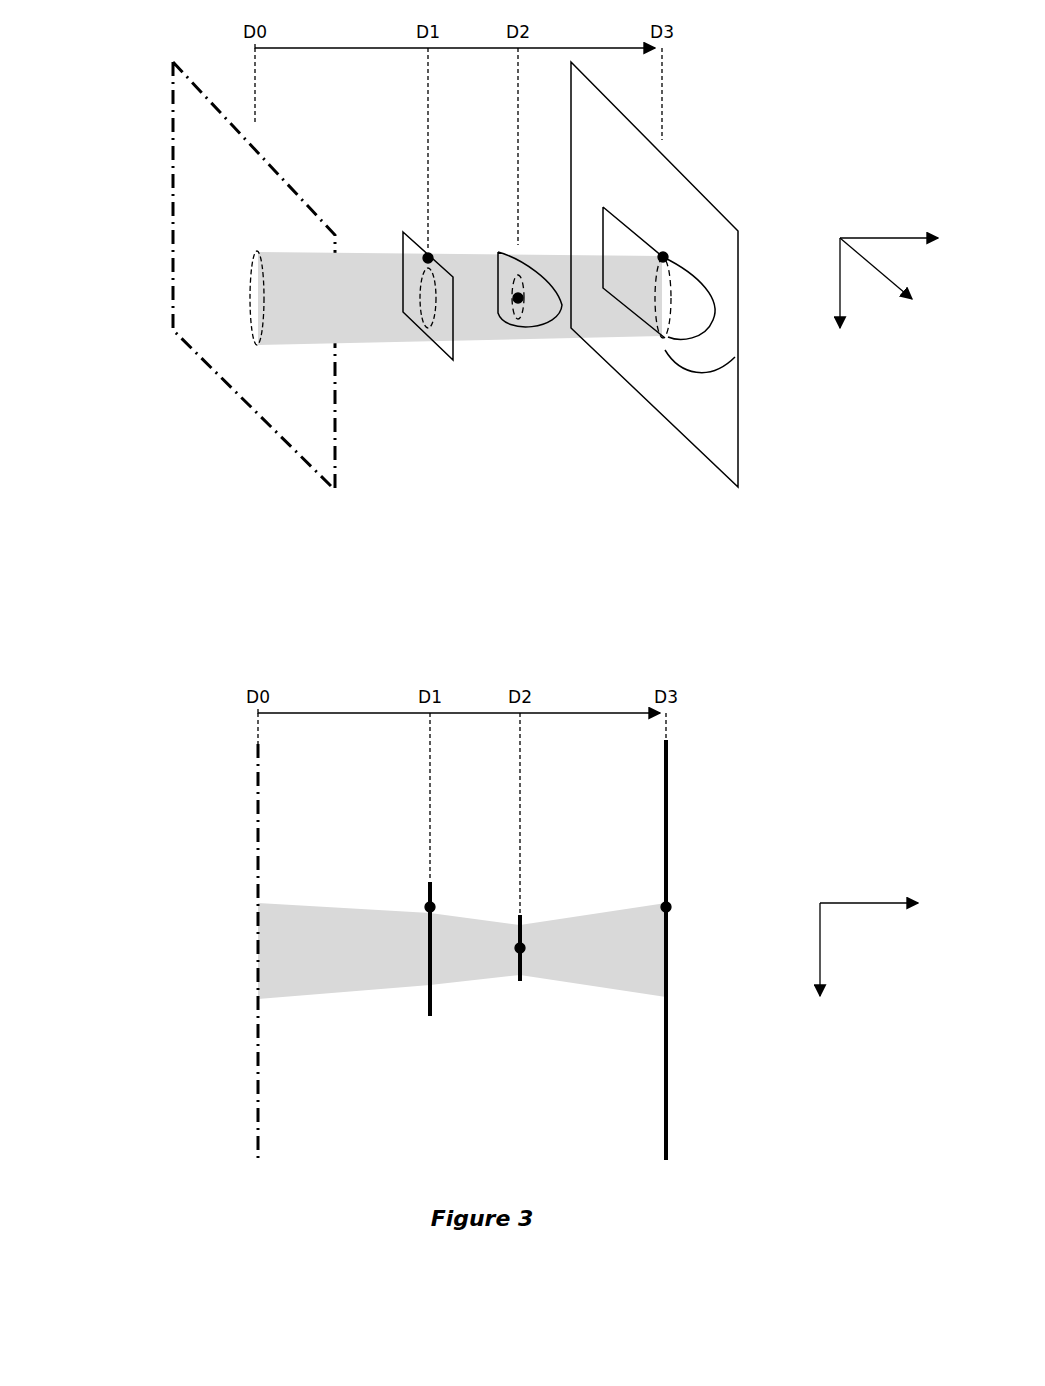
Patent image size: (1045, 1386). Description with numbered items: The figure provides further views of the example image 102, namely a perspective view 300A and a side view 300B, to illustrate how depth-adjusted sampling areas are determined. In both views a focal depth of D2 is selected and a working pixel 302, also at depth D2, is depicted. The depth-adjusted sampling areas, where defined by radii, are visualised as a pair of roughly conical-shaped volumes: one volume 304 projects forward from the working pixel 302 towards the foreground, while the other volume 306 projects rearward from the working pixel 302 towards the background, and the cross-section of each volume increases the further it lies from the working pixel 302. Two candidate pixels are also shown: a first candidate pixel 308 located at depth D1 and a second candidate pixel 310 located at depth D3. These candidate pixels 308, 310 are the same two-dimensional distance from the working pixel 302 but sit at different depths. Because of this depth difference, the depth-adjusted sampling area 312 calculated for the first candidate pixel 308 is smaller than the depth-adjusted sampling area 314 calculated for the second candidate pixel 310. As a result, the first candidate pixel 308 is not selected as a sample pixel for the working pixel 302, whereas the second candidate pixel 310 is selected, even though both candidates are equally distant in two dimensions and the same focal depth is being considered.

The view 300A is at (145, 92).
The view 300B is at (150, 748).
The example image 102 is at (803, 103).
The working pixel 302 is at (518, 302).
The conical-shaped volume 304 is at (250, 320).
The conical-shaped volume 306 is at (611, 322).
The first candidate pixel 308 is at (428, 258).
The second candidate pixel 310 is at (663, 257).
The depth-adjusted sampling area 312 is at (430, 322).
The depth-adjusted sampling area 314 is at (735, 357).